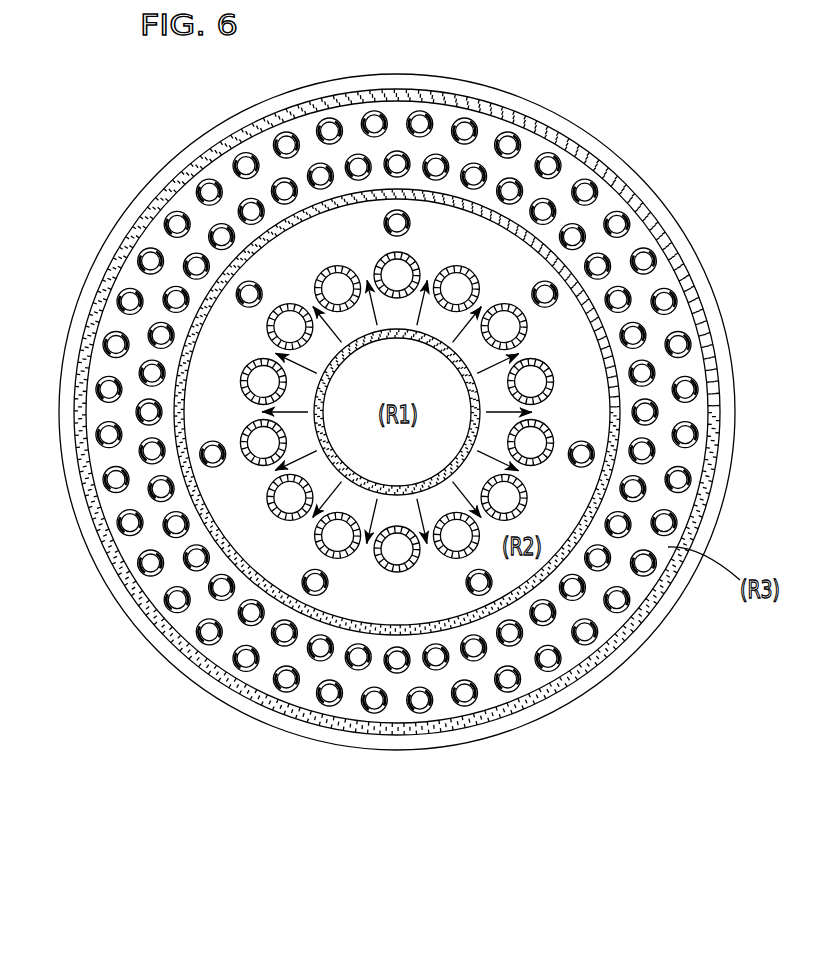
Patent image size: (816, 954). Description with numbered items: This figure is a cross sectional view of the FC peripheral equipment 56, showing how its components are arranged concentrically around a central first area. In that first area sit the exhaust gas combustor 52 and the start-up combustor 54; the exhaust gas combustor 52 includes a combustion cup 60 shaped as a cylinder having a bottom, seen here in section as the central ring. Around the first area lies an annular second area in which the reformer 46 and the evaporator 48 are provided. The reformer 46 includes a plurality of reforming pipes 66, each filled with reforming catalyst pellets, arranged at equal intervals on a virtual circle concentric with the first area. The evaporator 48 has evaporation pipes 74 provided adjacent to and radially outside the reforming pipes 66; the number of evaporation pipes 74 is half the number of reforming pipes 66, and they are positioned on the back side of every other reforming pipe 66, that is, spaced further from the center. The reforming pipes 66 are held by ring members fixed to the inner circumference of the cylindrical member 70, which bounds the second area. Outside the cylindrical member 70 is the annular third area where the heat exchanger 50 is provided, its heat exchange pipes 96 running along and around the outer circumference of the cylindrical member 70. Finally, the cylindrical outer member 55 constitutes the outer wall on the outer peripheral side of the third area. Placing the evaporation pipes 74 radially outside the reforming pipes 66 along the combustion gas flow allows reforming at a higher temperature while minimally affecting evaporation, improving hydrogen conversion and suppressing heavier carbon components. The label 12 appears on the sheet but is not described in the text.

The FC peripheral equipment 56 is at (397, 390).
The combustion apparatus 12 is at (663, 56).
The outer member 55 is at (659, 613).
The cylindrical member 70 is at (622, 430).
The heat exchange pipes 96 is at (375, 439).
The heat exchanger 50 is at (552, 665).
The evaporation pipes 74 is at (397, 493).
The evaporator 48 is at (310, 595).
The reforming pipes 66 is at (396, 523).
The reformer 46 is at (402, 572).
The combustion cup 60 is at (335, 412).
The exhaust gas combustor 52 is at (335, 412).
The start-up combustor 54 is at (330, 410).